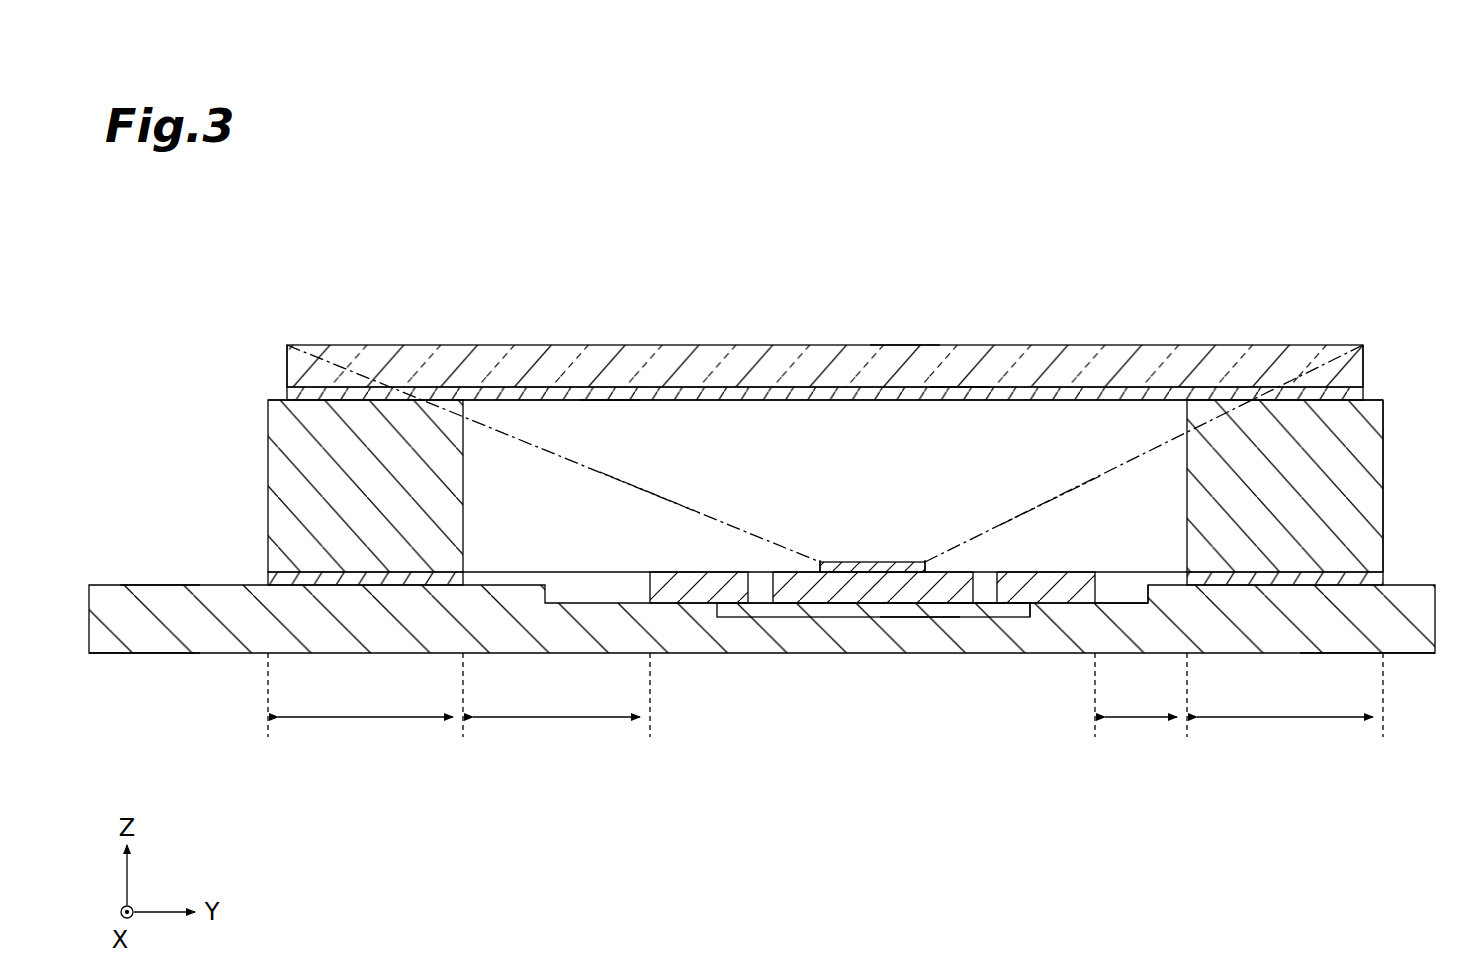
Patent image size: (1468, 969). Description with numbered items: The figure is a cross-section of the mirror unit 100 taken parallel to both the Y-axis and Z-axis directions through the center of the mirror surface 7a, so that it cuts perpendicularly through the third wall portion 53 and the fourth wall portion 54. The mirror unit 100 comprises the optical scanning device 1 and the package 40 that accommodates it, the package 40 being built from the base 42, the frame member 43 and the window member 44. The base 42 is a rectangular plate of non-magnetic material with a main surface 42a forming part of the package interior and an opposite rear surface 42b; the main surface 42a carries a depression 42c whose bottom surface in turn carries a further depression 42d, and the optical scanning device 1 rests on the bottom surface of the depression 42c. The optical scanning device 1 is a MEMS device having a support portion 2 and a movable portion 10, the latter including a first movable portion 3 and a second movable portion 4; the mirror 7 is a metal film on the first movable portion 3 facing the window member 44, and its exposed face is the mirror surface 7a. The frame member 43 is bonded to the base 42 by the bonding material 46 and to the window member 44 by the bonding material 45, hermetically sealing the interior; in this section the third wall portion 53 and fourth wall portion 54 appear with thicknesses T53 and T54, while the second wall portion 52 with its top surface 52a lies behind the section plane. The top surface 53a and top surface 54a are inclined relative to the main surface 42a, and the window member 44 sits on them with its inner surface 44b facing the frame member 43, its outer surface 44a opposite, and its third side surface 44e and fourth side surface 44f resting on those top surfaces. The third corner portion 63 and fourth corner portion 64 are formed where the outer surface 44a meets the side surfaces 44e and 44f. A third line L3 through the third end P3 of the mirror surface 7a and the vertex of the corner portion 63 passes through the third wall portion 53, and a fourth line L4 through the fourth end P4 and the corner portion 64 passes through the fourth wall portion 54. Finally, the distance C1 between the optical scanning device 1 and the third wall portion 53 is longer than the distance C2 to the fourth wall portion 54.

The mirror unit 100 is at (1338, 203).
The optical scanning device 1 is at (1073, 571).
The support portion 2 is at (872, 659).
The second movable portion 4 is at (692, 600).
The first movable portion 3 is at (845, 600).
The mirror 7 is at (875, 562).
The mirror surface 7a is at (872, 514).
The movable portion 10 is at (920, 620).
The package 40 is at (1410, 657).
The base 42 is at (110, 597).
The main surface 42a is at (140, 585).
The rear surface 42b is at (115, 655).
The depression 42c is at (1132, 600).
The depression 42d is at (1028, 614).
The frame member 43 is at (1384, 506).
The window member 44 is at (800, 345).
The outer surface 44a is at (905, 345).
The inner surface 44b is at (955, 387).
The third side surface 44e is at (285, 372).
The fourth side surface 44f is at (1365, 372).
The bonding material 45 is at (1350, 395).
The bonding material 46 is at (1325, 578).
The second wall portion 52 is at (688, 423).
The top surface 52a is at (607, 398).
The third wall portion 53 is at (285, 465).
The top surface 53a is at (320, 398).
The fourth wall portion 54 is at (1350, 455).
The top surface 54a is at (1228, 400).
The third corner portion 63 is at (287, 345).
The fourth corner portion 64 is at (1363, 345).
The third line L3 is at (700, 496).
The fourth line L4 is at (1050, 492).
The third end P3 is at (822, 562).
The fourth end P4 is at (925, 562).
The thickness T53 is at (370, 718).
The thickness T54 is at (1291, 718).
The distance C1 is at (558, 718).
The distance C2 is at (1143, 718).